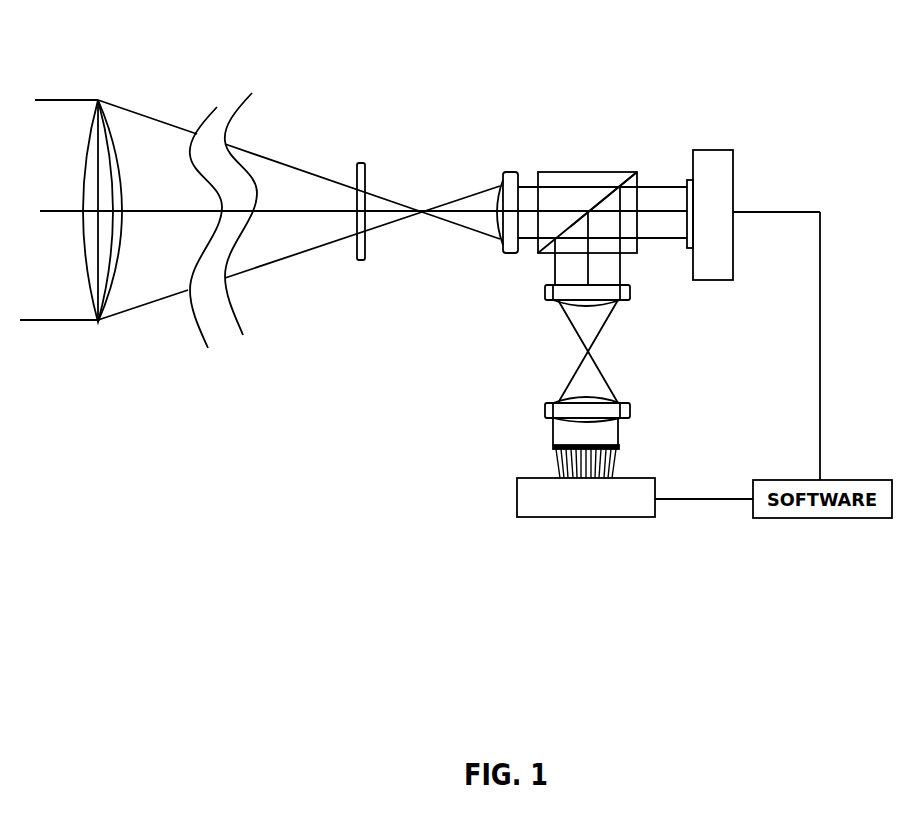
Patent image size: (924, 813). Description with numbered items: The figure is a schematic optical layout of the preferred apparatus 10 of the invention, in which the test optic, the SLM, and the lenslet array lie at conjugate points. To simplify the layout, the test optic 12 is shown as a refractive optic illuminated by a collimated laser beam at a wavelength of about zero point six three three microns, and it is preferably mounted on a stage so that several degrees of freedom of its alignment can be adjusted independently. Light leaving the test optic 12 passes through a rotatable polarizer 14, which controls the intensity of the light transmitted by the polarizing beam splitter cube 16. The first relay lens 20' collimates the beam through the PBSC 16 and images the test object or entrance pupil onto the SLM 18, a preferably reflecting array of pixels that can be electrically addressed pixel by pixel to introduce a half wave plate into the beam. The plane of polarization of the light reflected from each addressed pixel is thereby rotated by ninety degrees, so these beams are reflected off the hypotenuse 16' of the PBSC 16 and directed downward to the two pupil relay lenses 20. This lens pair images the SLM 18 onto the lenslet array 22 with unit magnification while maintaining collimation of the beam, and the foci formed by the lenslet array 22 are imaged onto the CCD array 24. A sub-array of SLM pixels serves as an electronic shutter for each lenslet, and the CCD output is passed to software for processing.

The apparatus 10 is at (737, 105).
The test optic 12 is at (97, 325).
The polarizer 14 is at (365, 162).
The polarizing beam splitter cube 16 is at (587, 148).
The hypotenuse 16' is at (639, 261).
The spatial light modulator 18 is at (695, 211).
The pupil relay lenses 20 is at (519, 353).
The first relay lens 20' is at (524, 145).
The lenslet array 22 is at (552, 450).
The CCD array 24 is at (587, 532).